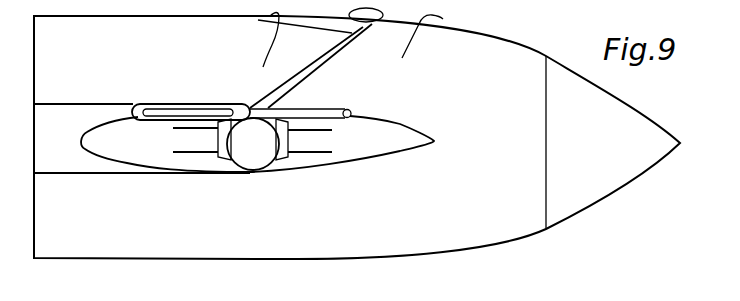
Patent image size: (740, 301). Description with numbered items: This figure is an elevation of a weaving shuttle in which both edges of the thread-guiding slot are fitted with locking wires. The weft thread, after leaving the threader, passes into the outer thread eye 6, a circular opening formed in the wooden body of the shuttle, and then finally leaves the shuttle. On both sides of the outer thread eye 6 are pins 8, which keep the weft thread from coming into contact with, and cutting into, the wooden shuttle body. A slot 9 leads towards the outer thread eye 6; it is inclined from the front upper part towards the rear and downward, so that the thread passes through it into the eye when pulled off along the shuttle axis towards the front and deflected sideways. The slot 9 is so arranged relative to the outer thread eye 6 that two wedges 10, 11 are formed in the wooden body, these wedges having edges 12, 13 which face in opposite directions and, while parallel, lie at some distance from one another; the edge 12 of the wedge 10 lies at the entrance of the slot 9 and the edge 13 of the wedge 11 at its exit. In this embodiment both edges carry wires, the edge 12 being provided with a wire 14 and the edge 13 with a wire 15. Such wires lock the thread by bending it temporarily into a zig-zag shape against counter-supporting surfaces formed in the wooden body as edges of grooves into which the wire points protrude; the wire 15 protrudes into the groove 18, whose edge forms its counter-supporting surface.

The outer thread eye 6 is at (254, 133).
The pins 8 is at (283, 153).
The slot 9 is at (327, 58).
The wedge 10 is at (270, 16).
The wedge 11 is at (424, 36).
The edge 12 is at (347, 31).
The edge 13 is at (268, 107).
The wire 14 is at (374, 30).
The wire 15 is at (182, 112).
The groove 18 is at (160, 119).